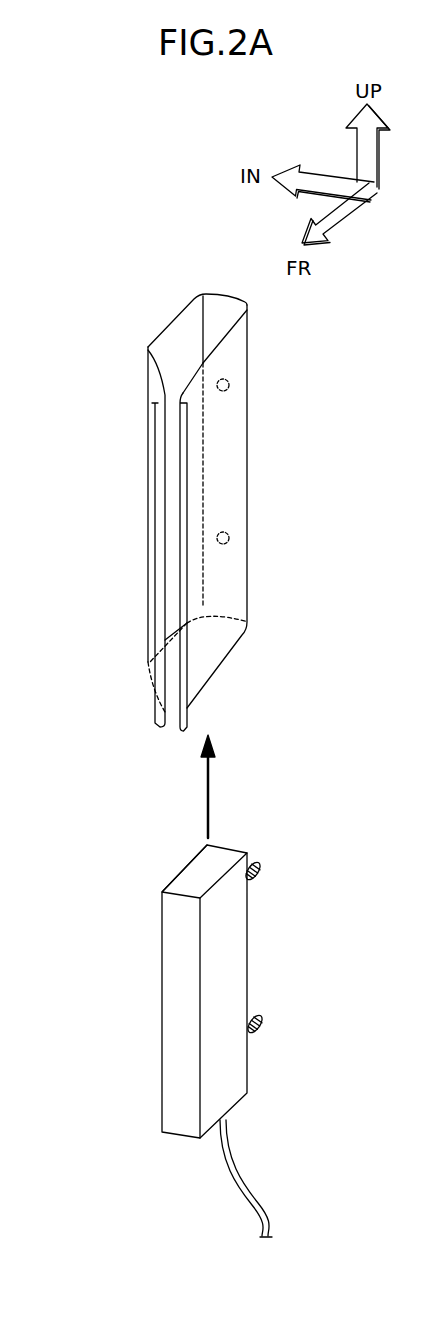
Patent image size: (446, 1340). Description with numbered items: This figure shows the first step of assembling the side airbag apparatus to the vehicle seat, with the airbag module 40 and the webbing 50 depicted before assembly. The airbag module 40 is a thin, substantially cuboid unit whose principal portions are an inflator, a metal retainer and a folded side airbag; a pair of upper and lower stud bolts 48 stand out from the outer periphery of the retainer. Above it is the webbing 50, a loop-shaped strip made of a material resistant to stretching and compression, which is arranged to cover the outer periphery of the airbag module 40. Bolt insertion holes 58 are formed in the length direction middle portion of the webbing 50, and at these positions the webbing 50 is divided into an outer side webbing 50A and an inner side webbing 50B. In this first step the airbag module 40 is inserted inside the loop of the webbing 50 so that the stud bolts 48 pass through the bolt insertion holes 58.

The airbag module 40 is at (150, 1022).
The stud bolts 48 is at (259, 866).
The webbing 50 is at (138, 493).
The outer side webbing 50A is at (233, 448).
The inner side webbing 50B is at (172, 323).
The bolt insertion holes 58 is at (228, 380).